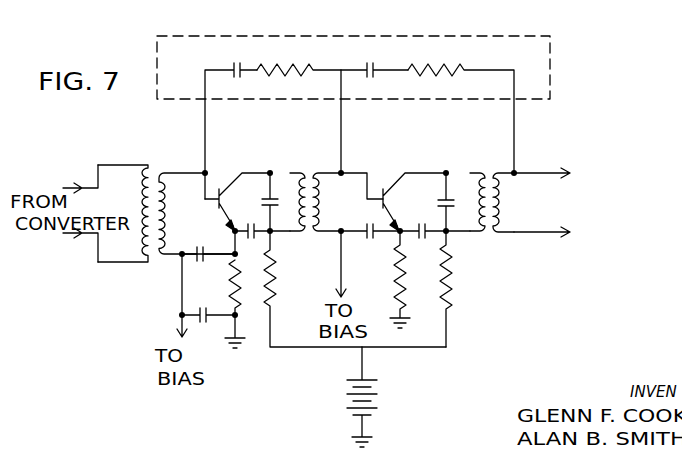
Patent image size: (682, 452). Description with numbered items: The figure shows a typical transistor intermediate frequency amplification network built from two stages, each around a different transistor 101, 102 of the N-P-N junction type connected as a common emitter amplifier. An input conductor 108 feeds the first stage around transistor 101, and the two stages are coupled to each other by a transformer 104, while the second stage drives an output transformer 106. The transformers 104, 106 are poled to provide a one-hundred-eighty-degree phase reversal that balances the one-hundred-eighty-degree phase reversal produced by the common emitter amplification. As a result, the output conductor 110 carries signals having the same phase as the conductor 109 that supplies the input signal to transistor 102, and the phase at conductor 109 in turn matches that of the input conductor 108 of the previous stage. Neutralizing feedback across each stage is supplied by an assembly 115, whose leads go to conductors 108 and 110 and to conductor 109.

The neutralizing feedback assembly 115 is at (474, 36).
The input conductor 108 is at (188, 172).
The first transistor 101 is at (220, 188).
The interstage transformer 104 is at (310, 172).
The interstage conductor 109 is at (351, 173).
The second transistor 102 is at (385, 189).
The output transformer 106 is at (488, 173).
The output conductor 110 is at (530, 173).